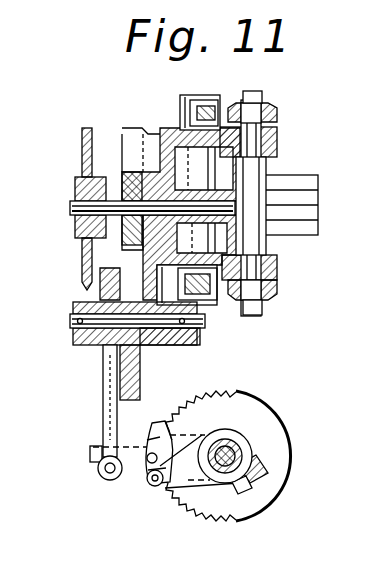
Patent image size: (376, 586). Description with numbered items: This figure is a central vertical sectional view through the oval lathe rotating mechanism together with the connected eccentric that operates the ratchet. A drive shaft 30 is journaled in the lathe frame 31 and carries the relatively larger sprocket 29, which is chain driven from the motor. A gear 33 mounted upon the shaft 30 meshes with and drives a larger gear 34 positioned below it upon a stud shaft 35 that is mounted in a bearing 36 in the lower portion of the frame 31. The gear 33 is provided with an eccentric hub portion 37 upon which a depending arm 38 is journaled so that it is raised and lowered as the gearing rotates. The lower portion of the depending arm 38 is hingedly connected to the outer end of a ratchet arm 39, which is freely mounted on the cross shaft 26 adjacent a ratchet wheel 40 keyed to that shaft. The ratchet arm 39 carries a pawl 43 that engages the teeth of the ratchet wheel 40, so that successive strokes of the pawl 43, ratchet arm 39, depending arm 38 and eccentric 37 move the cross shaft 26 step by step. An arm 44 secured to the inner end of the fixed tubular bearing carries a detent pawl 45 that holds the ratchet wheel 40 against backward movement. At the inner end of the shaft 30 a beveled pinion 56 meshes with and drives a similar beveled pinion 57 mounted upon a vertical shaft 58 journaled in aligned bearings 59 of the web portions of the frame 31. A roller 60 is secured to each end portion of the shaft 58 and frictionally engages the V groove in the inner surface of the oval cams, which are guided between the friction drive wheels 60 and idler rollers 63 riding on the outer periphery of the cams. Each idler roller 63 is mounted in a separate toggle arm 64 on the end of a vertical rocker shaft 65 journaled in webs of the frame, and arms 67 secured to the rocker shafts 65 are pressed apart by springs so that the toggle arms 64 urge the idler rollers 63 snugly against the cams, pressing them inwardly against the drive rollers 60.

The cross shaft 26 is at (236, 445).
The sprocket 29 is at (82, 150).
The drive shaft 30 is at (62, 208).
The lathe frame 31 is at (168, 134).
The gear 33 is at (130, 174).
The gear 34 is at (120, 380).
The stud shaft 35 is at (100, 306).
The bearing 36 is at (182, 331).
The eccentric hub portion 37 is at (90, 280).
The depending arm 38 is at (103, 406).
The ratchet arm 39 is at (125, 470).
The ratchet wheel 40 is at (282, 448).
The pawl 43 is at (160, 425).
The arm 44 is at (193, 477).
The detent pawl 45 is at (150, 470).
The beveled pinion 56 is at (238, 195).
The beveled pinion 57 is at (268, 240).
The vertical shaft 58 is at (277, 150).
The bearings 59 is at (277, 134).
The roller 60 is at (270, 108).
The idler rollers 63 is at (214, 106).
The toggle arm 64 is at (181, 100).
The rocker shafts 65 is at (196, 95).
The arms 67 is at (306, 180).